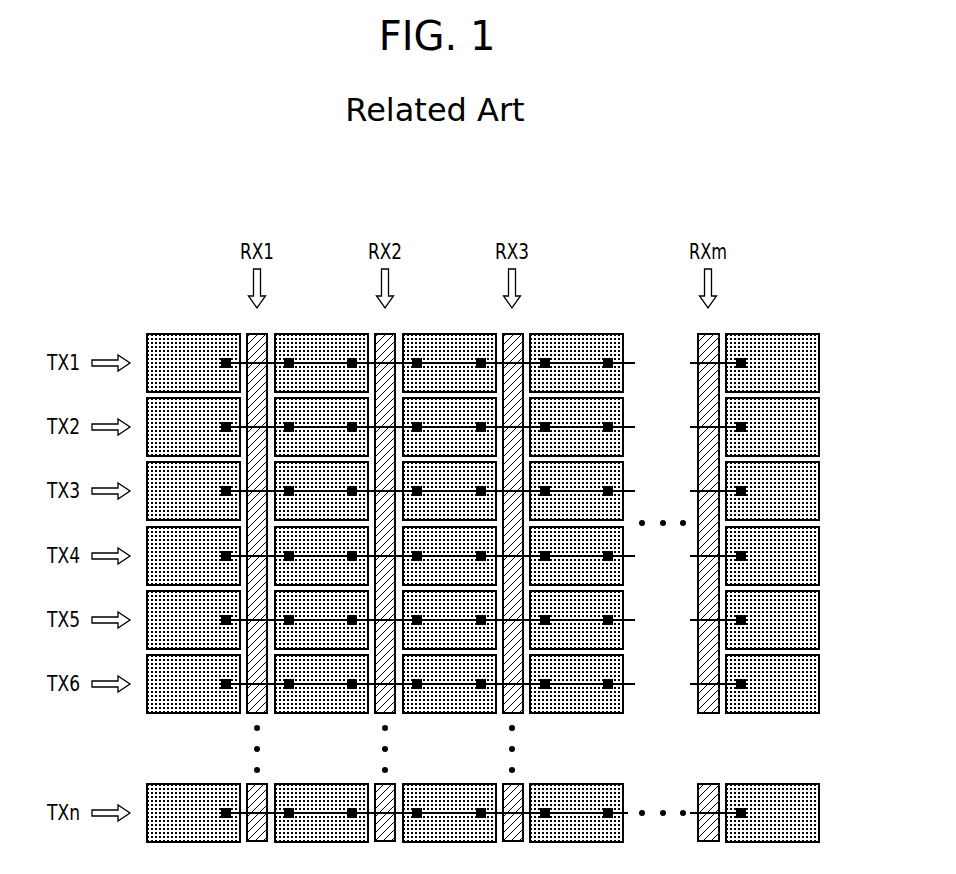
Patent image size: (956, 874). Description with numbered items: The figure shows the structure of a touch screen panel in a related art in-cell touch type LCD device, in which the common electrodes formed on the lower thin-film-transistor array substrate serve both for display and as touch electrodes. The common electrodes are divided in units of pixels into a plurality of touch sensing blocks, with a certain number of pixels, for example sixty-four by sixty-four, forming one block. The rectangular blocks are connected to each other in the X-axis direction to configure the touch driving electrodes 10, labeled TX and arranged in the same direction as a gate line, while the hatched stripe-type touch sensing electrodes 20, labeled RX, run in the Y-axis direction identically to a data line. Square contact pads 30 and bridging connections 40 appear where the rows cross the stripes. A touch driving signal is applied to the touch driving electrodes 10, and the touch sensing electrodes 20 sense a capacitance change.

The touch driving electrode 10 is at (189, 334).
The touch sensing electrode 20 is at (380, 333).
The contact / connection pad 30 is at (290, 357).
The bridge connecting line 40 is at (377, 362).